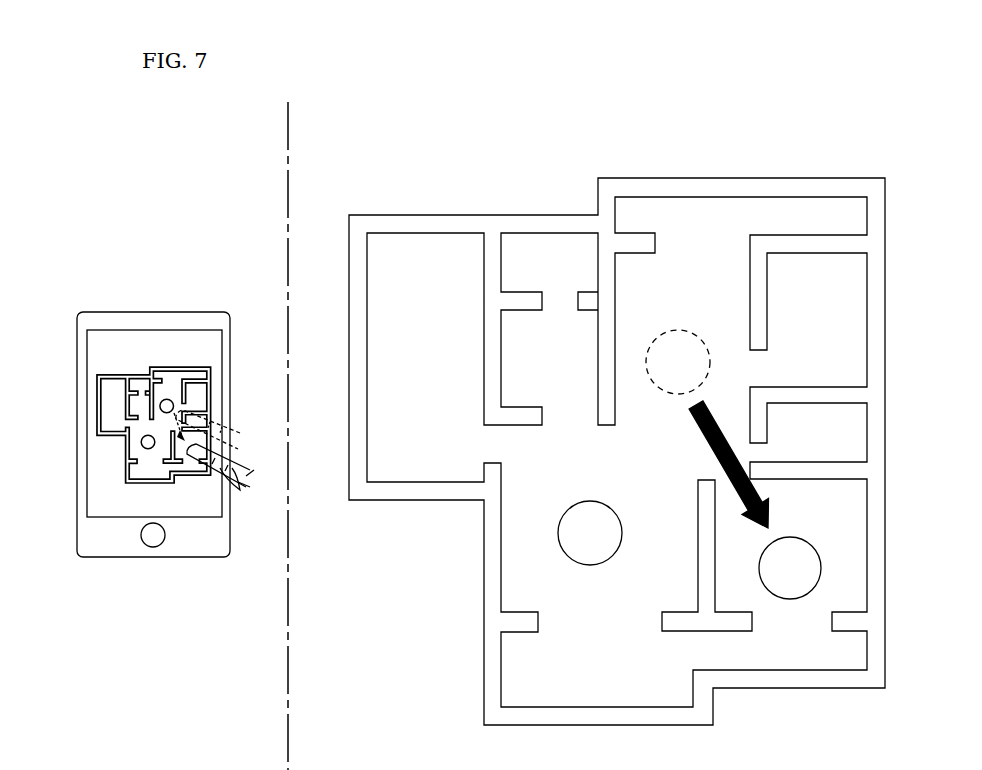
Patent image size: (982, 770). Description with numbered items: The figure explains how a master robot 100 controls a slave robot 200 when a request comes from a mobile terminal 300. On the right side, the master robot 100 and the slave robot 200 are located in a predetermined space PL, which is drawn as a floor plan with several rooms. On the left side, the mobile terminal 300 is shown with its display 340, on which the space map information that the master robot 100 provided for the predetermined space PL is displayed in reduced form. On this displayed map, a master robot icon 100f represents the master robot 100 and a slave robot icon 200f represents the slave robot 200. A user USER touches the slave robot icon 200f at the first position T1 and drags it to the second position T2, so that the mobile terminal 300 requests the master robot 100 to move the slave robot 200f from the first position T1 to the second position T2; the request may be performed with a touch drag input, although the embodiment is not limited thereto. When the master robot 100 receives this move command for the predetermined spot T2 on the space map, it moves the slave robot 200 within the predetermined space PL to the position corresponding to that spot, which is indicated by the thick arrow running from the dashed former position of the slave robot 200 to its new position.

The predetermined space PL is at (399, 171).
The master robot 100 is at (558, 526).
The slave robot 200 is at (680, 333).
The mobile terminal 300 is at (188, 312).
The display of mobile terminal 340 is at (135, 348).
The master robot icon 100f is at (141, 443).
The slave robot icon 200f is at (174, 403).
The first position T1 is at (180, 412).
The second position T2 is at (192, 448).
The user USER is at (219, 472).